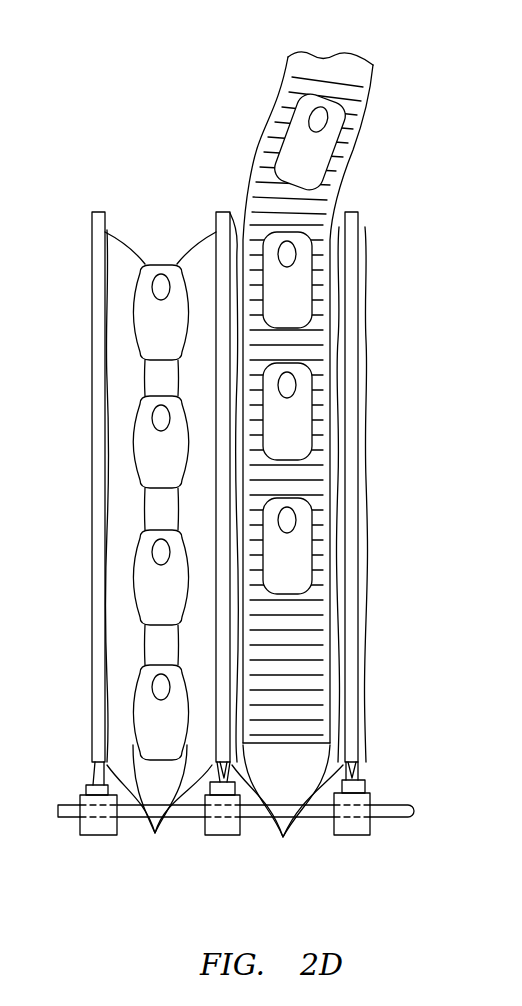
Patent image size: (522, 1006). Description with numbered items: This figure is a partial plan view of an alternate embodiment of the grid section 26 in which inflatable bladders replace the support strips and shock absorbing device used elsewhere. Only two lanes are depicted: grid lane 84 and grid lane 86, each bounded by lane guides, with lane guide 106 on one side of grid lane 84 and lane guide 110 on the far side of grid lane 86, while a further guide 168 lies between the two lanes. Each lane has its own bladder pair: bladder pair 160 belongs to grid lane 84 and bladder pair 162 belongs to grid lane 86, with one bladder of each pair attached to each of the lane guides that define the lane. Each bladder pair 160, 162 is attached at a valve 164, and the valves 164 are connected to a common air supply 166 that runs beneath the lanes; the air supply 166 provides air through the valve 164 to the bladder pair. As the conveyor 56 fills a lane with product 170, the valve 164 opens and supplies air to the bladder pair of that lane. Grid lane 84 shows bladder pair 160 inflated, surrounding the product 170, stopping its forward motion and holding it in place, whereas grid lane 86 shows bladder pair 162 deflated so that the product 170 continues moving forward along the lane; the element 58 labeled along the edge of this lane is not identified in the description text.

The grid section 26 is at (404, 317).
The conveyor 56 is at (285, 90).
The carrier strip 58 is at (352, 147).
The grid lane 84 is at (154, 167).
The grid lane 86 is at (368, 47).
The lane guide 106 is at (99, 212).
The lane guide 110 is at (358, 213).
The bladder pair 160 is at (155, 833).
The bladder pair 162 is at (283, 837).
The valve 164 is at (100, 835).
The air supply 166 is at (62, 812).
The guide rail 168 is at (222, 212).
The product 170 is at (345, 110).